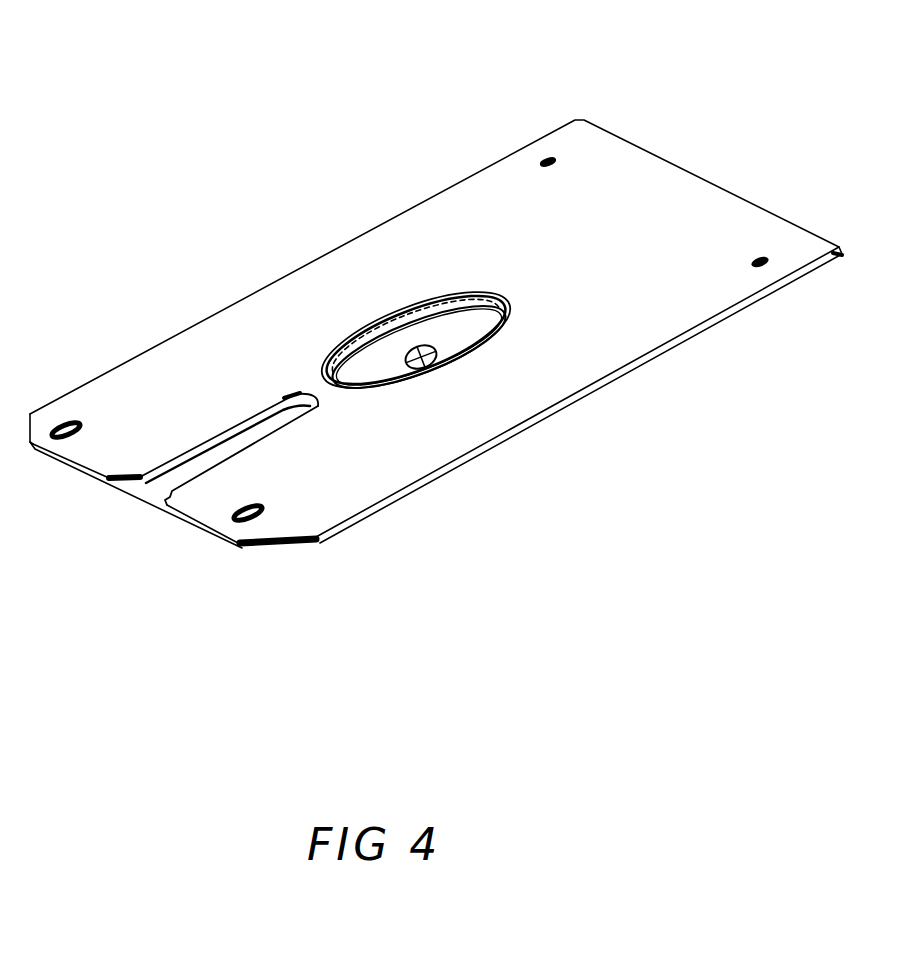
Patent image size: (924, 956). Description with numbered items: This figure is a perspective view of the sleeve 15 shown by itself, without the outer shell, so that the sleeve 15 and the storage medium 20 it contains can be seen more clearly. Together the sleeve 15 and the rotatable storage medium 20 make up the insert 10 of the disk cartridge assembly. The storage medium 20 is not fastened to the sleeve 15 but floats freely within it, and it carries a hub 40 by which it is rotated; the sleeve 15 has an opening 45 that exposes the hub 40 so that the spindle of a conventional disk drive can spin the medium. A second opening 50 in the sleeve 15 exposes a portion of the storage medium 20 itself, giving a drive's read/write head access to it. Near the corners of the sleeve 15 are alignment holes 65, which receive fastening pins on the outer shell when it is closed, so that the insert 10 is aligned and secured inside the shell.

The insert 10 is at (751, 139).
The sleeve 15 is at (607, 380).
The rotatable storage medium 20 is at (178, 470).
The opening 50 is at (207, 460).
The hub 40 is at (372, 323).
The opening 45 is at (437, 368).
The alignment holes 65 is at (53, 430).